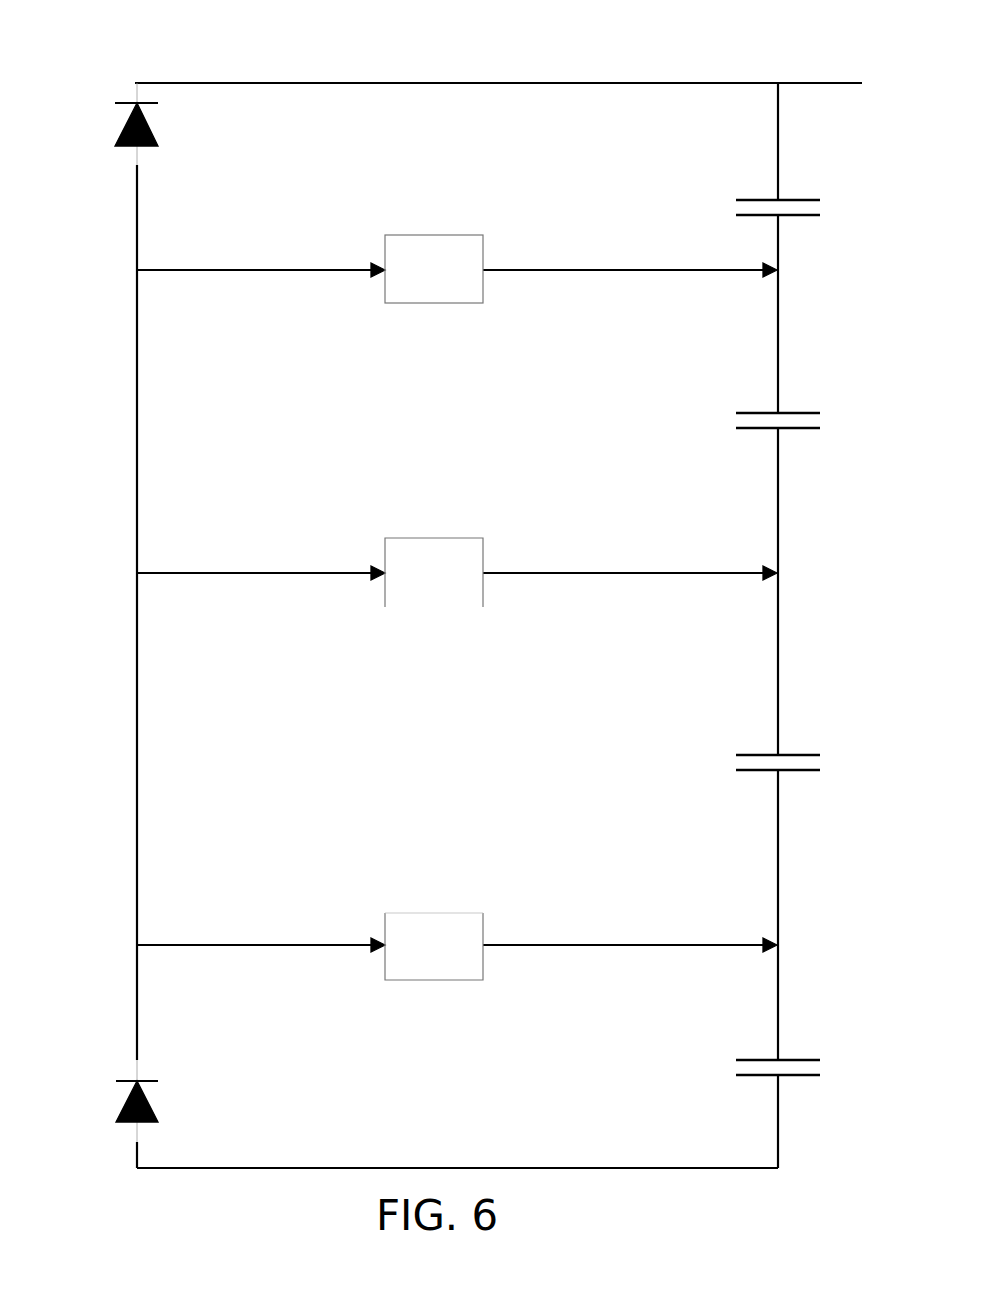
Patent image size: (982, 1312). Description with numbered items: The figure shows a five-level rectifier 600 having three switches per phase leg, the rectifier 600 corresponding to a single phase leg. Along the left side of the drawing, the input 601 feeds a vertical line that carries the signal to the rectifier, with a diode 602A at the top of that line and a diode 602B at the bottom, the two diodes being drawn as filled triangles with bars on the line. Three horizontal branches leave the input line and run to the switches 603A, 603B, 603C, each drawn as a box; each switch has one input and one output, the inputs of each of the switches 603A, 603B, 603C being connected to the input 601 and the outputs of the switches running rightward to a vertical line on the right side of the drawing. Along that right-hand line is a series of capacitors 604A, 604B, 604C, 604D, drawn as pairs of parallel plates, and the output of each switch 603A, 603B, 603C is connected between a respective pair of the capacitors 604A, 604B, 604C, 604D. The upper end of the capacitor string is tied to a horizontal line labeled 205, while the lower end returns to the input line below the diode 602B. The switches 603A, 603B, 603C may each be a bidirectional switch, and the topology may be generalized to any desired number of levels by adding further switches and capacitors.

The 5-level rectifier 600 is at (53, 48).
The bus line 205 is at (890, 93).
The input 601 is at (137, 639).
The diode 602A is at (157, 128).
The diode 602B is at (150, 1093).
The switch 603A is at (457, 290).
The switch 603B is at (457, 593).
The switch 603C is at (457, 965).
The capacitor 604A is at (742, 204).
The capacitor 604B is at (743, 419).
The capacitor 604C is at (743, 762).
The capacitor 604D is at (743, 1067).